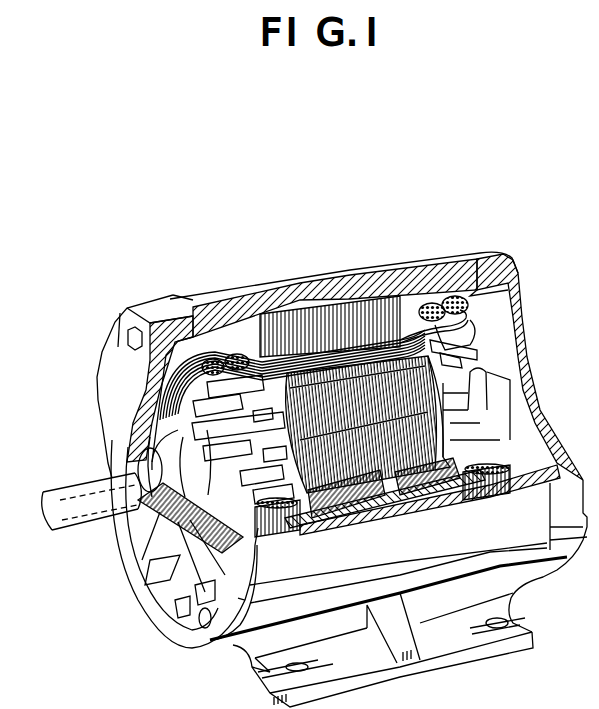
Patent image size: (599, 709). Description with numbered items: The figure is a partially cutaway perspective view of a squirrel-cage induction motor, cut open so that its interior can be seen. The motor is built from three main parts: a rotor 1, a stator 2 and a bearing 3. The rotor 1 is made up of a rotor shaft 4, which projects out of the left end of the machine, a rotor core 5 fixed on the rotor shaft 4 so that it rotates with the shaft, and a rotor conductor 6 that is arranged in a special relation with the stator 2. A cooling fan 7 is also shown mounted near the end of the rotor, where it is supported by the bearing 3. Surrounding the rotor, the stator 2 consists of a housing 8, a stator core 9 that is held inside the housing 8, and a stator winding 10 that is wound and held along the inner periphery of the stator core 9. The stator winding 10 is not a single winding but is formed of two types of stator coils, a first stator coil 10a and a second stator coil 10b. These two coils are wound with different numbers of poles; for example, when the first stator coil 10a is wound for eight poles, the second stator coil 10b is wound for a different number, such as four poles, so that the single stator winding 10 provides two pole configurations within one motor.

The rotor 1 is at (232, 318).
The stator 2 is at (377, 262).
The bearing 3 is at (147, 517).
The rotor shaft 4 is at (58, 490).
The rotor core 5 is at (392, 480).
The rotor conductor 6 is at (458, 477).
The cooling fan 7 is at (256, 525).
The housing 8 is at (196, 292).
The stator core 9 is at (366, 500).
The stator winding 10 is at (425, 326).
The first stator coil 10a is at (318, 330).
The second stator coil 10b is at (365, 348).